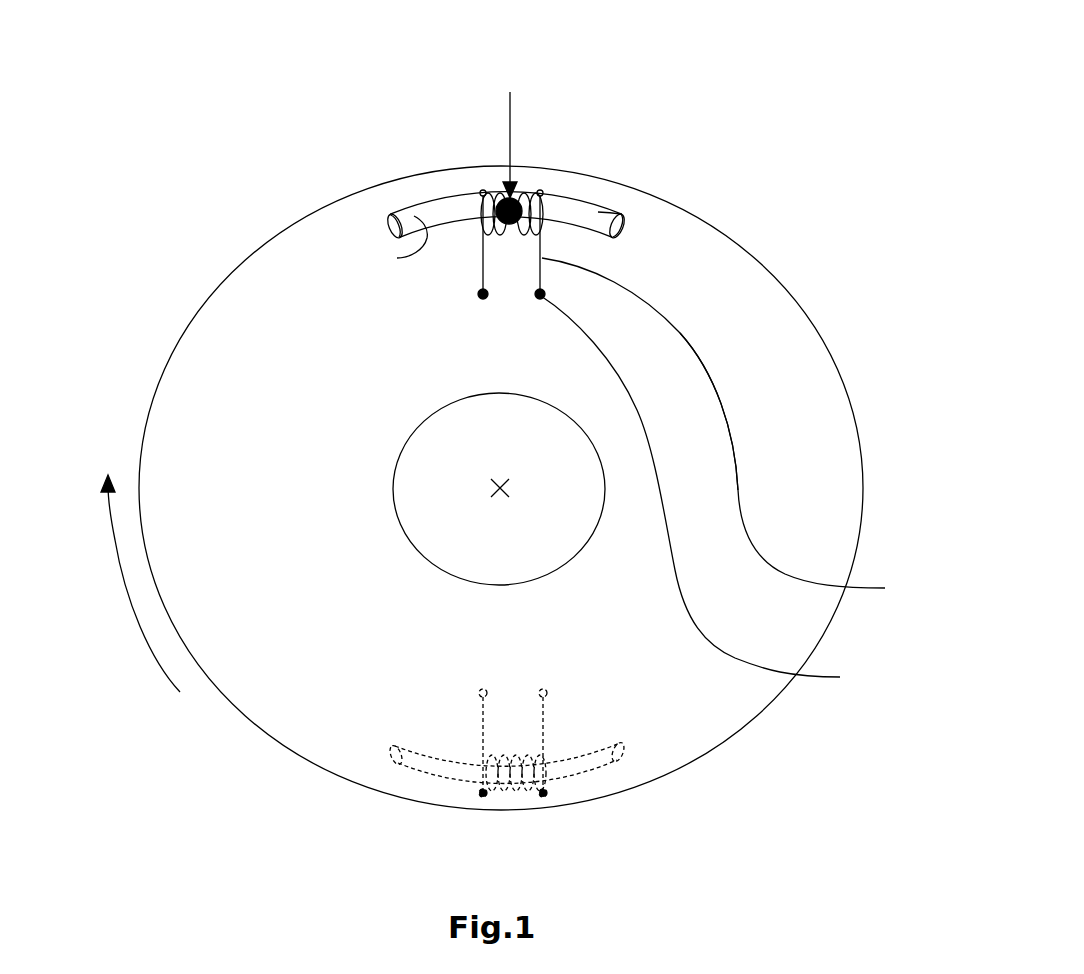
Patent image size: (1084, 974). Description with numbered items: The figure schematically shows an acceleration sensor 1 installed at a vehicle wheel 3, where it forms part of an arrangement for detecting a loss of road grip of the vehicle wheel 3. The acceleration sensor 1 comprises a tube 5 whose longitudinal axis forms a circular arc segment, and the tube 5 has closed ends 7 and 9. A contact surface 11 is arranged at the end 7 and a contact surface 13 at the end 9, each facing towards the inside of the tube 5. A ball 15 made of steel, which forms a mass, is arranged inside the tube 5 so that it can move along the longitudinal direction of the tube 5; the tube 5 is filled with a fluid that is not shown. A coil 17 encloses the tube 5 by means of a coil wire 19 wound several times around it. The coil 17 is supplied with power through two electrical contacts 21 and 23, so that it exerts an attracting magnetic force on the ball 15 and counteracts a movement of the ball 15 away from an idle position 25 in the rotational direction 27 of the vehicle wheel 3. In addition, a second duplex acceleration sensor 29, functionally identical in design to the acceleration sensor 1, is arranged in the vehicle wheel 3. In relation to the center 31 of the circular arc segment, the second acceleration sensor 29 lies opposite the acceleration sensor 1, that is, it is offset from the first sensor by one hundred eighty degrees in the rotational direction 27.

The acceleration sensor 1 is at (646, 276).
The vehicle wheel 3 is at (858, 416).
The tube 5 is at (397, 258).
The closed end 7 is at (393, 204).
The closed end 9 is at (636, 218).
The contact surface 11 is at (400, 228).
The contact surface 13 is at (604, 224).
The ball 15 is at (478, 208).
The coil 17 is at (729, 431).
The coil wire 19 is at (490, 220).
The electrical contact 21 is at (482, 296).
The electrical contact 23 is at (710, 493).
The idle position 25 is at (510, 133).
The rotational direction 27 is at (122, 583).
The second duplex acceleration sensor 29 is at (560, 785).
The center 31 is at (500, 490).